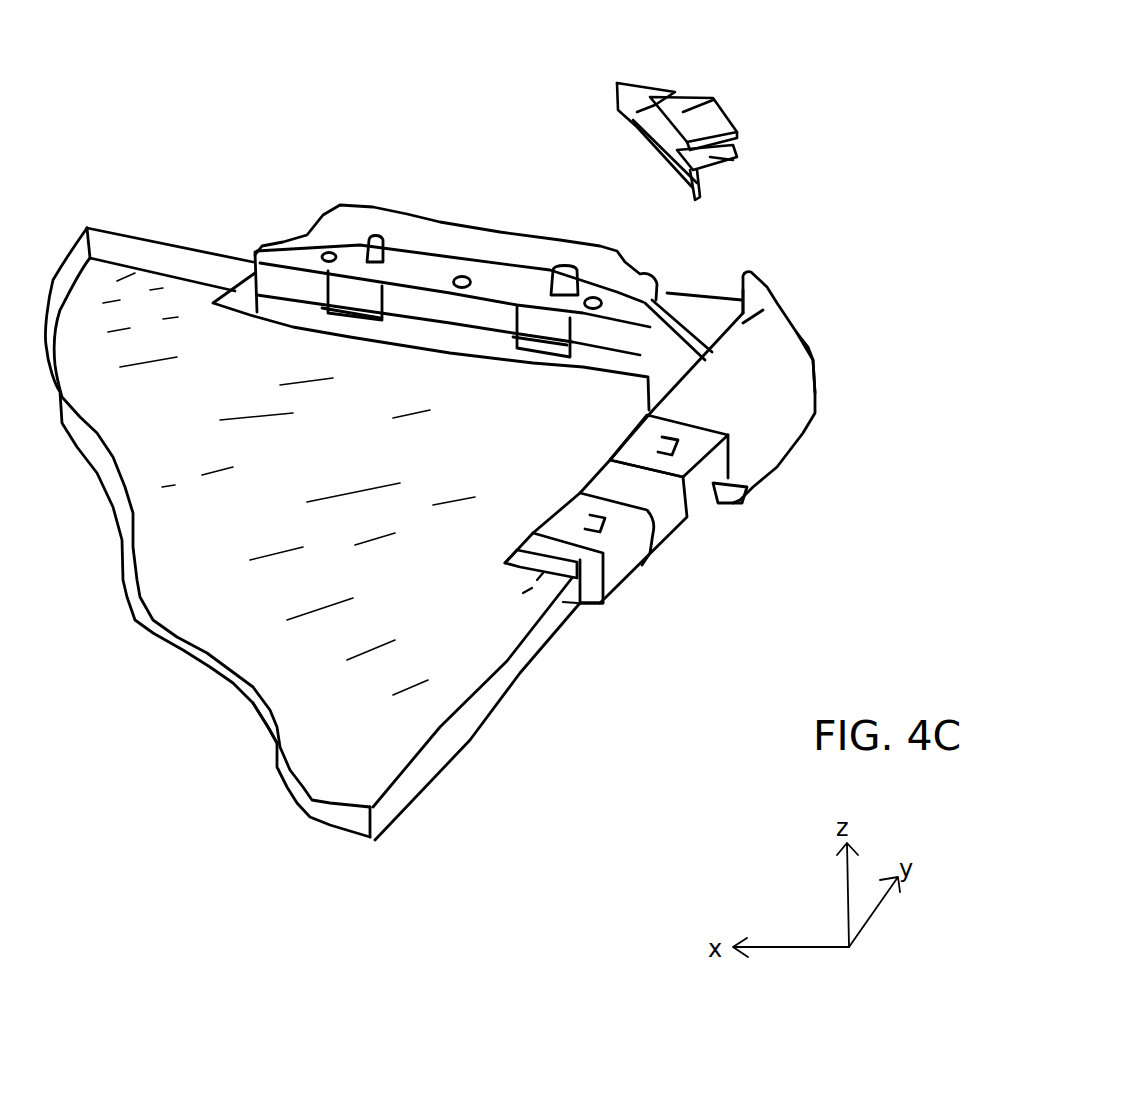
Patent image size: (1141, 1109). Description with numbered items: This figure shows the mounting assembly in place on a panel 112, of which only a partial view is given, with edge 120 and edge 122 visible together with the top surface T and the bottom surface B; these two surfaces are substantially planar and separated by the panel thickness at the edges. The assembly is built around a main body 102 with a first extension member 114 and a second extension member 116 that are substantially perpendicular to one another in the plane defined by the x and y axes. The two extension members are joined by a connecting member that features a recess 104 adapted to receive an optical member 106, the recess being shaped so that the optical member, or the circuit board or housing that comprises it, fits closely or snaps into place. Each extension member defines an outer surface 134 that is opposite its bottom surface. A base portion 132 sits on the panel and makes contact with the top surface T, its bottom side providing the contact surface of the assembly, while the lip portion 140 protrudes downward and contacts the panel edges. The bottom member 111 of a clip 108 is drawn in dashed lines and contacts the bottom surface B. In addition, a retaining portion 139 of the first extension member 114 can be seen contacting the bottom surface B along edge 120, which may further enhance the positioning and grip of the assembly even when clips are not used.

The main body 102 is at (803, 357).
The recess 104 is at (712, 303).
The optical member 106 is at (713, 100).
The clip 108 is at (713, 490).
The bottom member 111 is at (533, 597).
The panel 112 is at (285, 748).
The first extension member 114 is at (430, 207).
The second extension member 116 is at (783, 423).
The edge 120 is at (126, 248).
The edge 122 is at (415, 787).
The base portion 132 is at (272, 312).
The outer surface 134 is at (607, 452).
The retaining portion 139 is at (353, 325).
The lip portion 140 is at (587, 607).
The bottom surface B is at (355, 835).
The top surface T is at (173, 597).